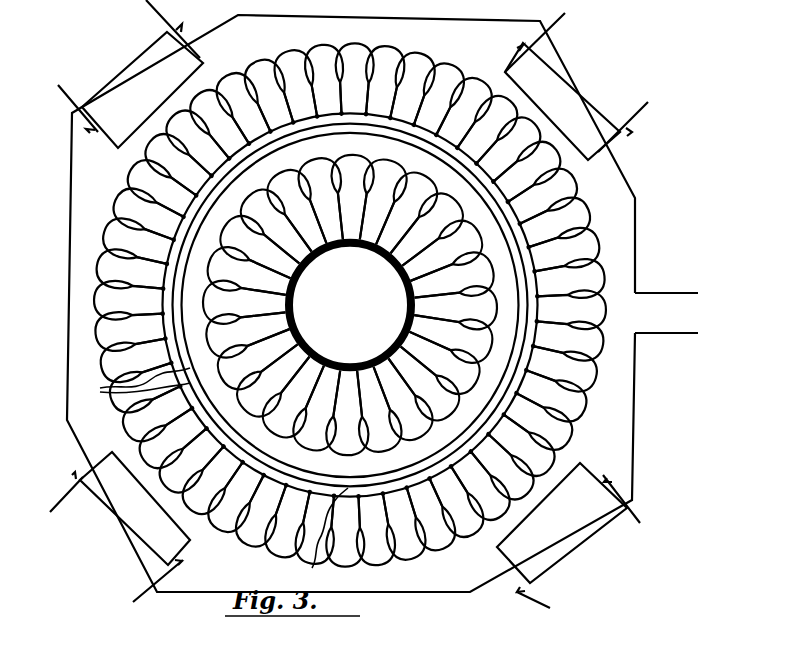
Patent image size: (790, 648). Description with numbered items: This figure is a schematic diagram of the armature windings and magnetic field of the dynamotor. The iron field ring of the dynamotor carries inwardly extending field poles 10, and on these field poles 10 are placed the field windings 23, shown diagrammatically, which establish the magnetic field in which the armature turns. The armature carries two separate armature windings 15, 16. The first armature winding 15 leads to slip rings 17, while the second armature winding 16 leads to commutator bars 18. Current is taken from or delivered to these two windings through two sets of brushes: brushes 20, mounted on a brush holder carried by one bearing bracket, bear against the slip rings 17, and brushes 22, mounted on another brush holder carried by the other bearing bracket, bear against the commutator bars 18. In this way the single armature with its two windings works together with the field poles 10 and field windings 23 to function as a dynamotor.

The field poles 10 is at (197, 58).
The armature winding 15 is at (113, 193).
The armature winding 16 is at (268, 335).
The slip rings 17 is at (100, 388).
The commutator bars 18 is at (297, 345).
The brushes 20 is at (319, 539).
The brushes 22 is at (365, 237).
The field windings 23 is at (108, 83).